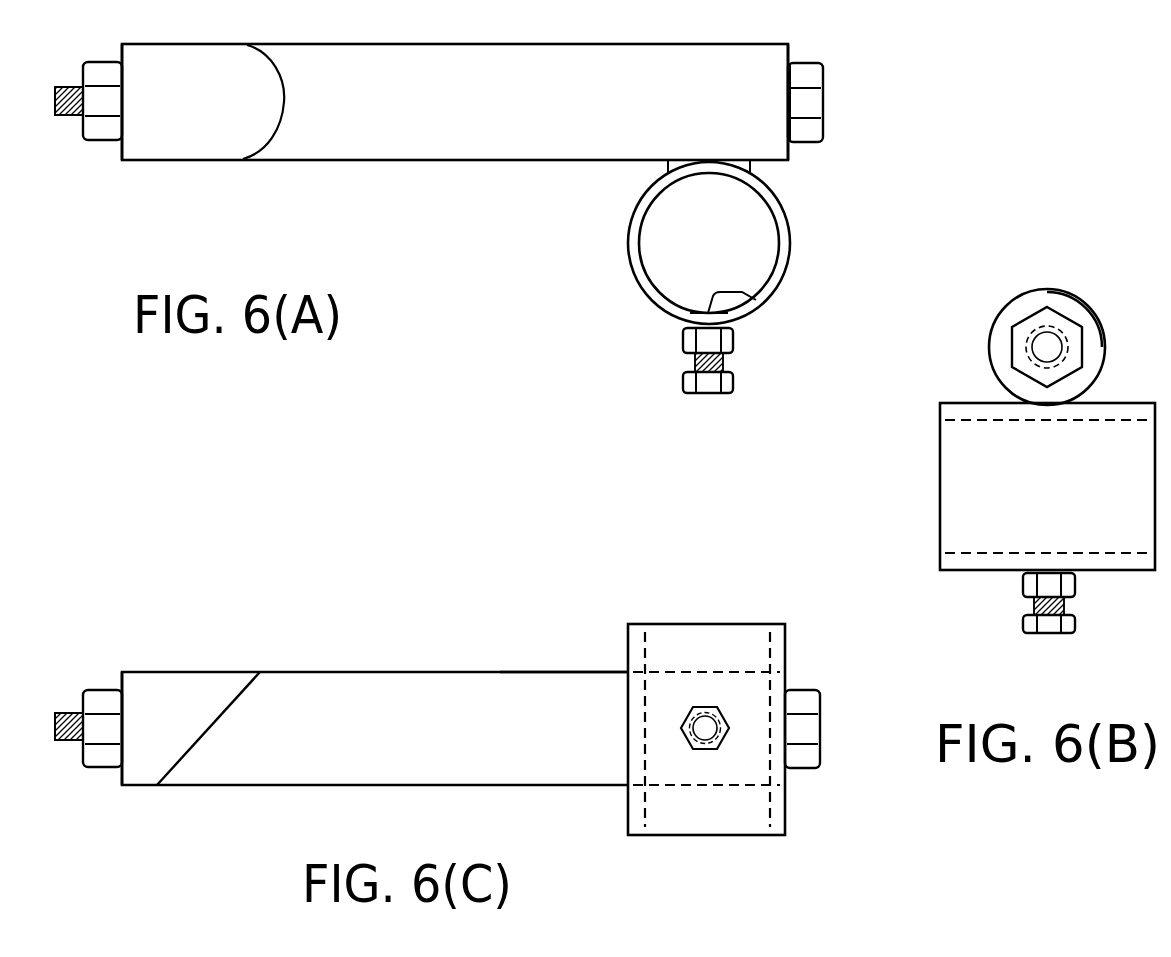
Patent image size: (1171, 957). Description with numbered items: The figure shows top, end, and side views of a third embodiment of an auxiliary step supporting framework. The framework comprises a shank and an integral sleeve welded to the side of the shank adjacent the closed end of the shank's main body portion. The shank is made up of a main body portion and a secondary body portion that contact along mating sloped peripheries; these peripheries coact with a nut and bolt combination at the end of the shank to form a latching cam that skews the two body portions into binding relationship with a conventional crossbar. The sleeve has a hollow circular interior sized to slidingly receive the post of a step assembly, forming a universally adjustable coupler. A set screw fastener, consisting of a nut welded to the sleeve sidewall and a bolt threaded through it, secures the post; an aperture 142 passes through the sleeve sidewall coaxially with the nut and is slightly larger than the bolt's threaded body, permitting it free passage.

The aperture 142 is at (745, 296).